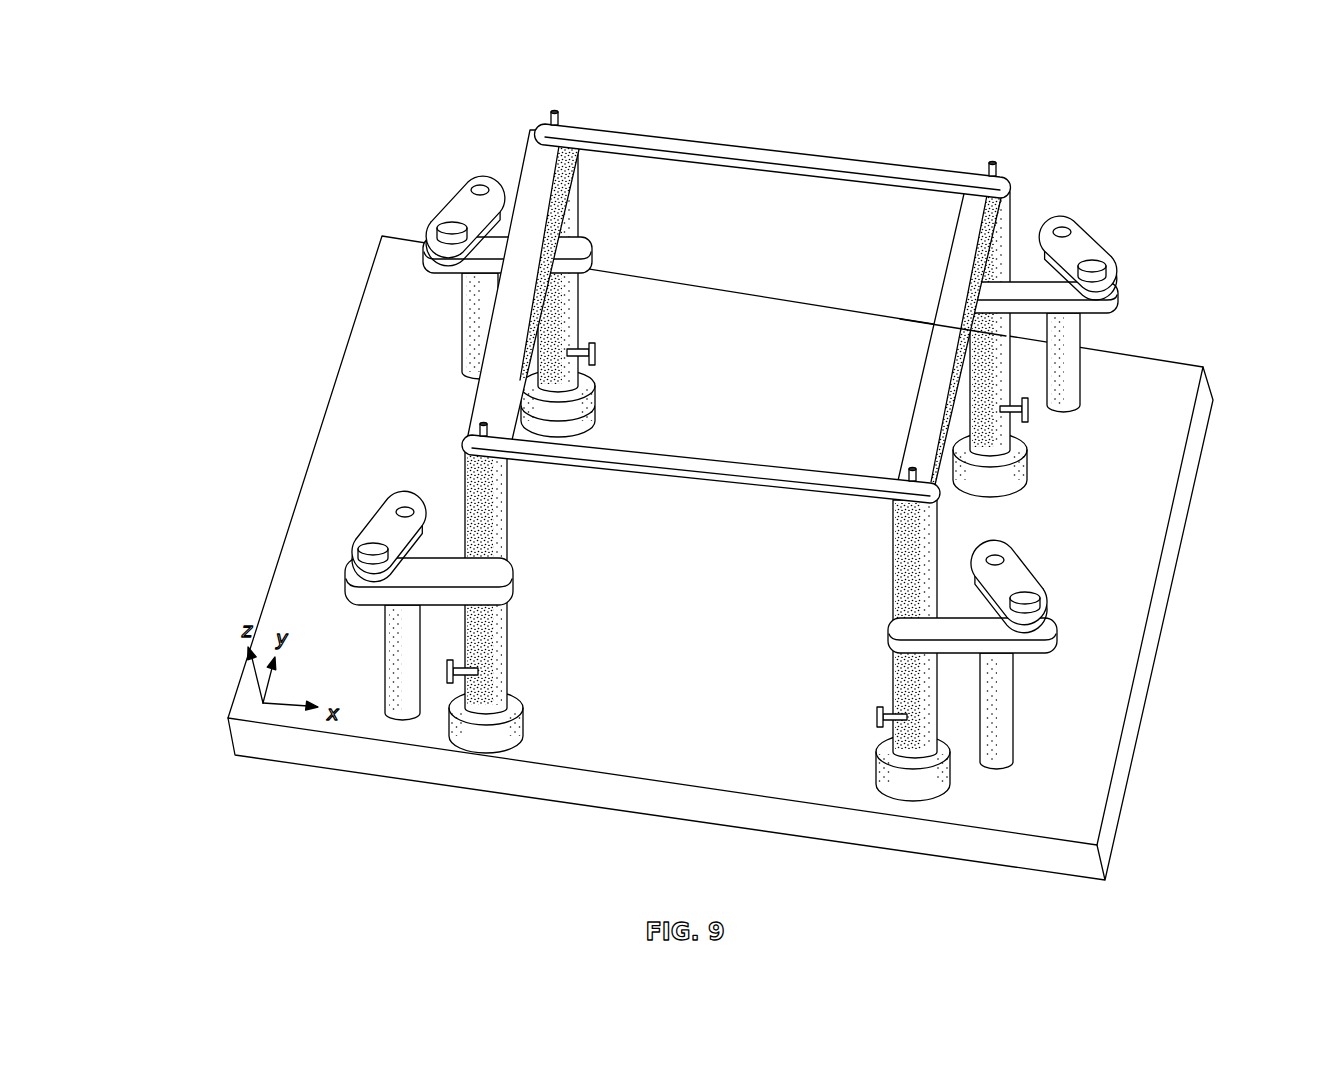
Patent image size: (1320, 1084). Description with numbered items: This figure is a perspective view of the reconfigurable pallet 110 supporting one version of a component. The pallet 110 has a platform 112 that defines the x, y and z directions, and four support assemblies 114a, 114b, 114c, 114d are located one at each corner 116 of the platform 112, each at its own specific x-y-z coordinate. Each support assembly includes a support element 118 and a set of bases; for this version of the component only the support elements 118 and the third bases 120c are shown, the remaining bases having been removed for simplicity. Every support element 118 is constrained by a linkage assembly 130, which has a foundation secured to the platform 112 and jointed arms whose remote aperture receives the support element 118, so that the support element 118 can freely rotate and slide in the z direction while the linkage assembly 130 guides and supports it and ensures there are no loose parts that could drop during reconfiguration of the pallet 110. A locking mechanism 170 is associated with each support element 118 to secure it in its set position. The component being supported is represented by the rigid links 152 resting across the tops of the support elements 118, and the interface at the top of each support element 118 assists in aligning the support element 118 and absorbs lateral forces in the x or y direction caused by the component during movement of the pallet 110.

The pallet 110 is at (275, 362).
The platform 112 is at (332, 505).
The support assembly 114a is at (1115, 232).
The support assembly 114b is at (410, 291).
The support assembly 114c is at (513, 518).
The support assembly 114d is at (850, 620).
The corner 116 is at (402, 396).
The support element 118 is at (580, 298).
The third base 120c is at (597, 374).
The linkage assembly 130 is at (475, 153).
The rigid link 152 is at (680, 455).
The locking mechanism 170 is at (613, 343).